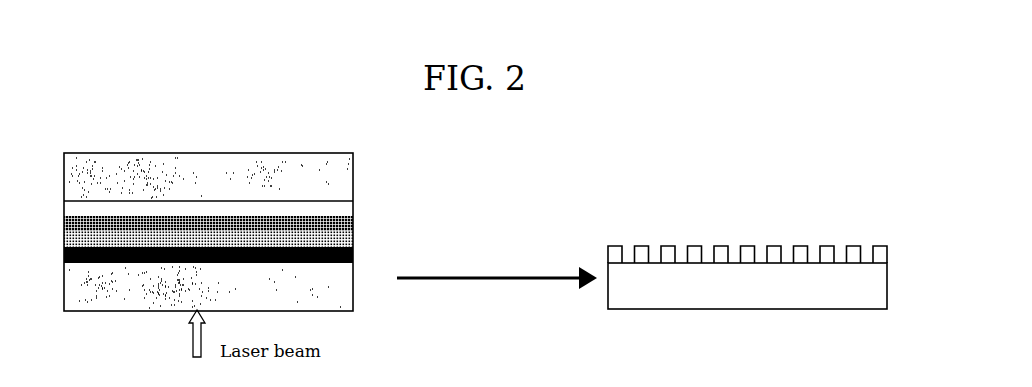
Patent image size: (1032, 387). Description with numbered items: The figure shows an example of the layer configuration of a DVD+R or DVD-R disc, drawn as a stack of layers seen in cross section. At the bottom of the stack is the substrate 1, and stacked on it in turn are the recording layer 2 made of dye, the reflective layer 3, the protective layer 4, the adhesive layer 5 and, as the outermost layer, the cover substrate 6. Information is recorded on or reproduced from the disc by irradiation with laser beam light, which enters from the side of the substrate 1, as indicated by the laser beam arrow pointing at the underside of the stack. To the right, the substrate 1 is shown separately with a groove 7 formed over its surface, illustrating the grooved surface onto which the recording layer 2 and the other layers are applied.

The substrate 1 is at (368, 294).
The recording layer 2 is at (368, 254).
The reflective layer 3 is at (368, 235).
The protective layer 4 is at (367, 219).
The adhesive layer 5 is at (367, 202).
The cover substrate 6 is at (368, 165).
The groove 7 is at (643, 249).